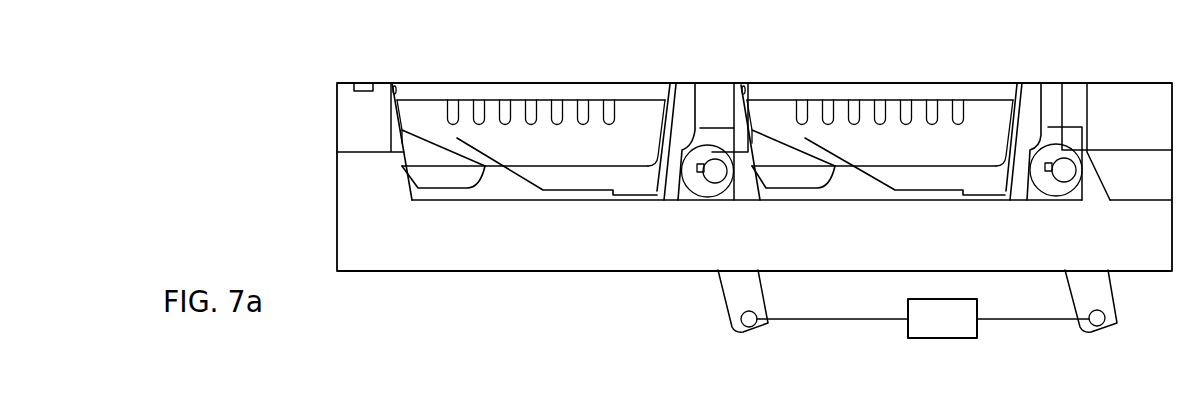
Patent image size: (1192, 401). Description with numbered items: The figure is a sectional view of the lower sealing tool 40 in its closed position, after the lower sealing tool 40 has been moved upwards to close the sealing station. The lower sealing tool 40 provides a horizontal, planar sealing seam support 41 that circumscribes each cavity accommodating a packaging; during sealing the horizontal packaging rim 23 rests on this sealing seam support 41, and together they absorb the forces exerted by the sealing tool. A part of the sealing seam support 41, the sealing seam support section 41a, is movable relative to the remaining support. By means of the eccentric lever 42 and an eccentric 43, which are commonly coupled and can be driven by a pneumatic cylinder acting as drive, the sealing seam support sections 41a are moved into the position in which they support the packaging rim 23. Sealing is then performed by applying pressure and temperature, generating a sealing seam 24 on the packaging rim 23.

The lower sealing tool 40 is at (352, 213).
The sealing seam support 41 is at (380, 82).
The sealing seam support section 41a is at (683, 102).
The packaging rim 23 is at (693, 128).
The sealing seam 24 is at (679, 78).
The eccentric lever 42 is at (750, 292).
The eccentric 43 is at (692, 180).